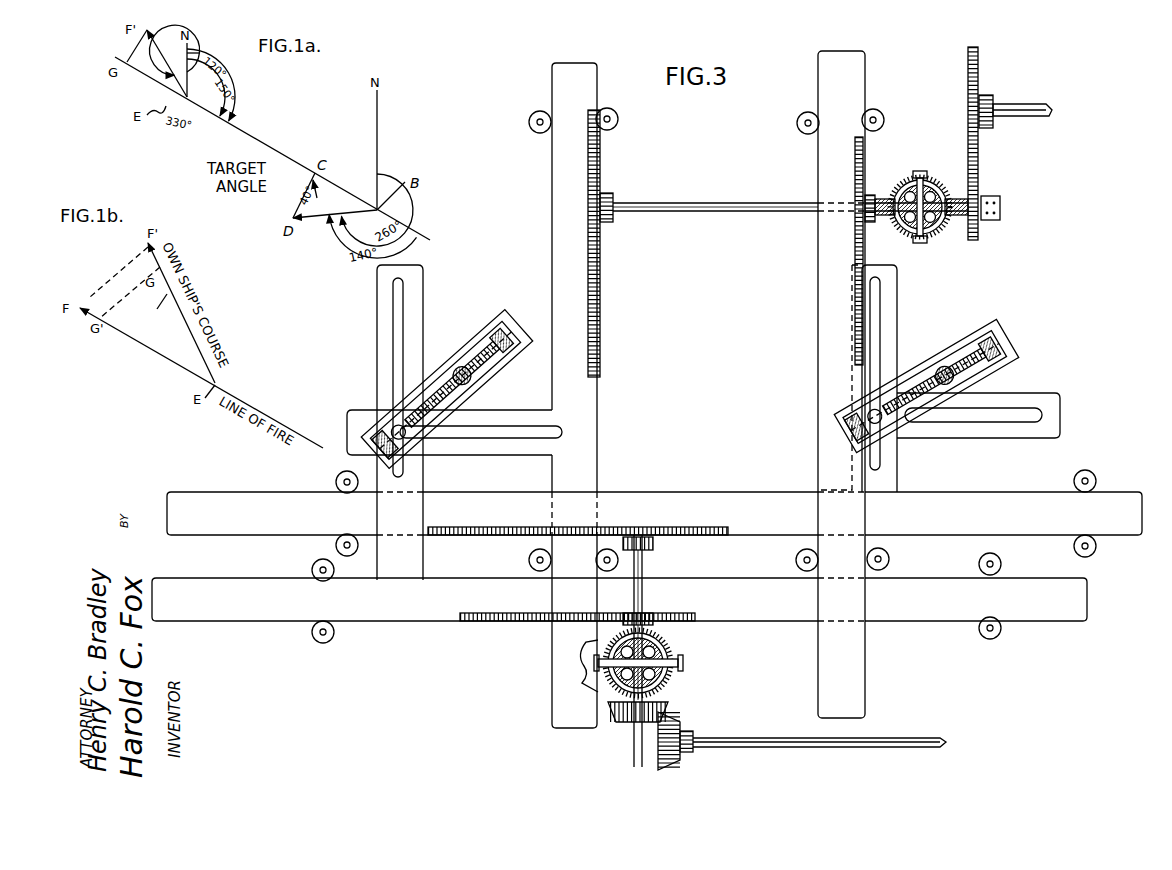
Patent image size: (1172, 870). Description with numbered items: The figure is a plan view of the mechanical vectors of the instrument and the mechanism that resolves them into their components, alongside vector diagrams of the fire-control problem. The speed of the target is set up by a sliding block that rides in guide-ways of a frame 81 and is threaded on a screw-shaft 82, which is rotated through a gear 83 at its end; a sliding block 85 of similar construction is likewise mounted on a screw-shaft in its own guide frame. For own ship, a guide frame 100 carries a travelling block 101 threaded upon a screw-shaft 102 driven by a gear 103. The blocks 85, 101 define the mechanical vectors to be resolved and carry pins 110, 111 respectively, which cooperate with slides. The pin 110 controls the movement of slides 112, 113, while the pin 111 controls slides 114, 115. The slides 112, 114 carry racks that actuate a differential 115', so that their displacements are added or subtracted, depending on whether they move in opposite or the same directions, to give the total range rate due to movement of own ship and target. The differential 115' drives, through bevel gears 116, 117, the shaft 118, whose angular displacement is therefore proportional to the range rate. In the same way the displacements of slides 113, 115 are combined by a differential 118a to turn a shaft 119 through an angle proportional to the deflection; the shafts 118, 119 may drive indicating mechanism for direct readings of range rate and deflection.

The frame 81 is at (517, 350).
The screw-shaft 82 is at (420, 397).
The gear 83 is at (493, 332).
The sliding block 85 is at (403, 420).
The guide frame 100 is at (1017, 368).
The travelling block 101 is at (897, 438).
The screw-shaft 102 is at (898, 397).
The gear 103 is at (1017, 350).
The pin 110 is at (422, 455).
The pin 111 is at (858, 400).
The slide 112 is at (417, 612).
The slide 113 is at (587, 412).
The slide 114 is at (716, 492).
The slide 115 is at (811, 384).
The differential 115' is at (666, 663).
The bevel gear 116 is at (617, 718).
The bevel gear 117 is at (678, 770).
The shaft 118 is at (792, 745).
The differential 118a is at (933, 240).
The shaft 119 is at (1018, 117).